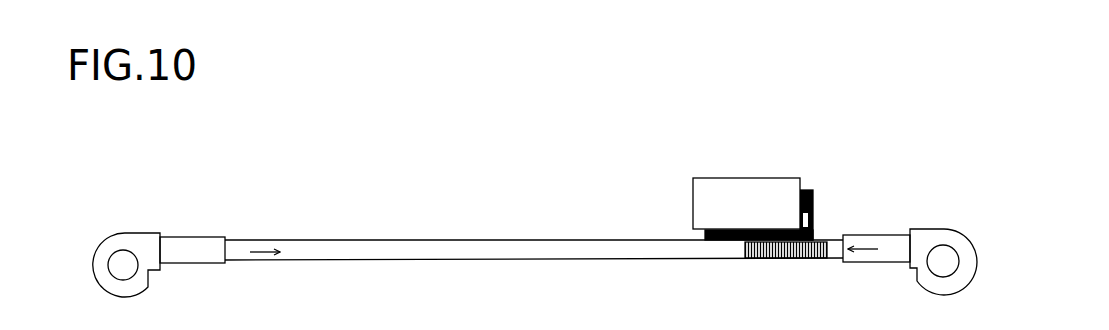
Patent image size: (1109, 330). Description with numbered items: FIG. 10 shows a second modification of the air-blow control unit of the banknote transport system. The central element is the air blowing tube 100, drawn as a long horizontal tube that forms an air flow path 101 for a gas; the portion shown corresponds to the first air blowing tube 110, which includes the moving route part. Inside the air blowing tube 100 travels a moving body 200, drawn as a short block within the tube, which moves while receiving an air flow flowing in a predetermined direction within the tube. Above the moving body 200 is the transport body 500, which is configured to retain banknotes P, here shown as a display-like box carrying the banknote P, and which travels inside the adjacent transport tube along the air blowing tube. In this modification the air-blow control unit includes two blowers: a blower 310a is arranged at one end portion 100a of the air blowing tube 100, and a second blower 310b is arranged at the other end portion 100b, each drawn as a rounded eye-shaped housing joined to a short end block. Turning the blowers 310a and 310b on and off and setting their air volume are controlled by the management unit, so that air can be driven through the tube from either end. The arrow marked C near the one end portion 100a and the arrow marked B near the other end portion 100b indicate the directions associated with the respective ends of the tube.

The blower 310a is at (137, 217).
The one end portion 100a is at (197, 232).
The air blowing tube 100 is at (534, 246).
The first air blowing tube 110 is at (534, 267).
The air flow path 101 is at (531, 260).
The moving body 200 is at (739, 248).
The transport body 500 is at (787, 191).
The banknote P is at (748, 177).
The other end portion 100b is at (876, 267).
The blower 310b is at (950, 218).
The direction C is at (258, 253).
The direction B is at (870, 250).